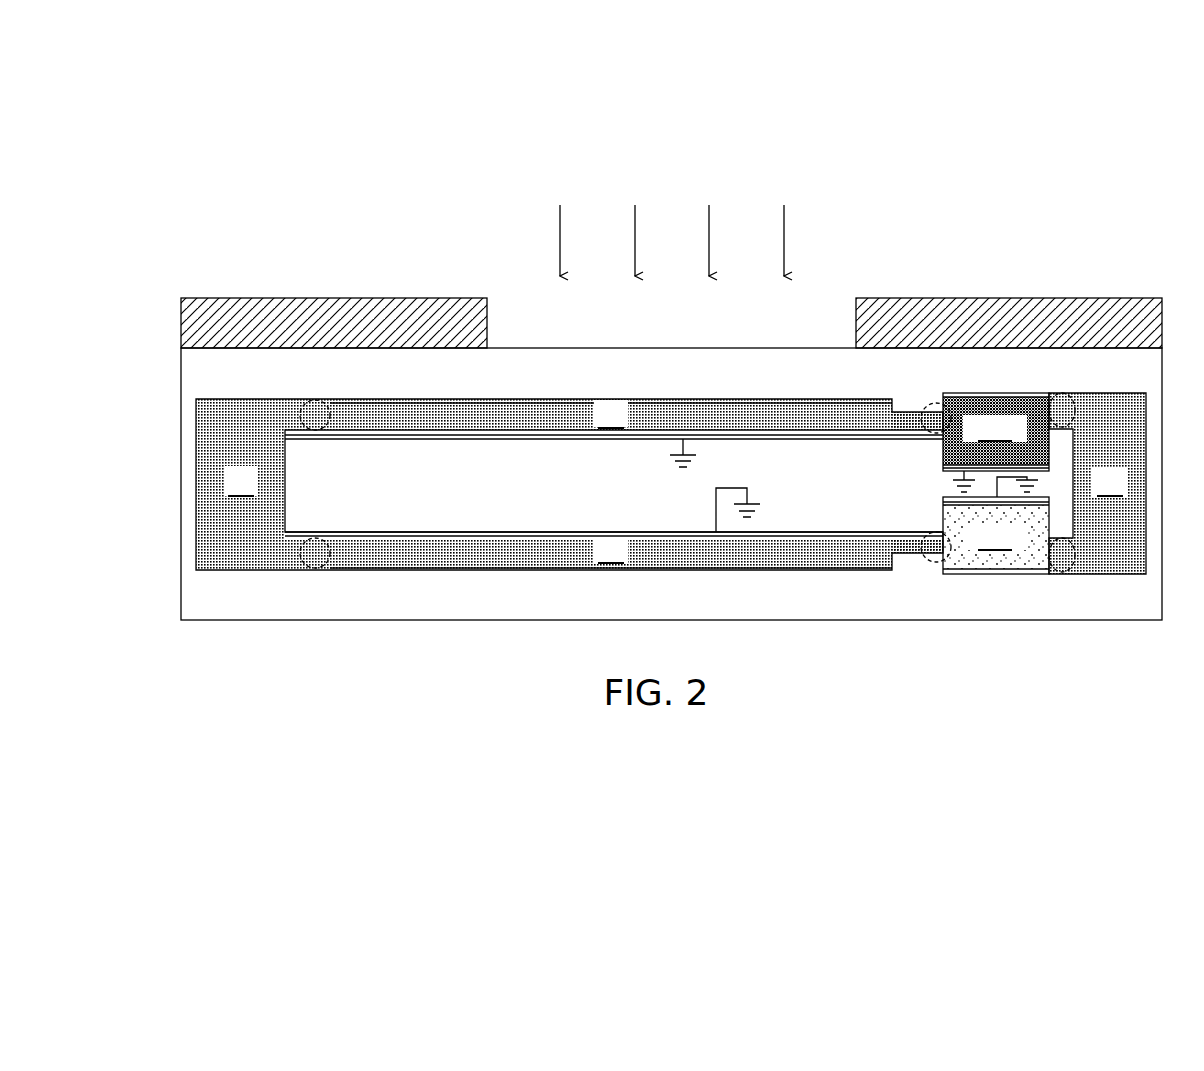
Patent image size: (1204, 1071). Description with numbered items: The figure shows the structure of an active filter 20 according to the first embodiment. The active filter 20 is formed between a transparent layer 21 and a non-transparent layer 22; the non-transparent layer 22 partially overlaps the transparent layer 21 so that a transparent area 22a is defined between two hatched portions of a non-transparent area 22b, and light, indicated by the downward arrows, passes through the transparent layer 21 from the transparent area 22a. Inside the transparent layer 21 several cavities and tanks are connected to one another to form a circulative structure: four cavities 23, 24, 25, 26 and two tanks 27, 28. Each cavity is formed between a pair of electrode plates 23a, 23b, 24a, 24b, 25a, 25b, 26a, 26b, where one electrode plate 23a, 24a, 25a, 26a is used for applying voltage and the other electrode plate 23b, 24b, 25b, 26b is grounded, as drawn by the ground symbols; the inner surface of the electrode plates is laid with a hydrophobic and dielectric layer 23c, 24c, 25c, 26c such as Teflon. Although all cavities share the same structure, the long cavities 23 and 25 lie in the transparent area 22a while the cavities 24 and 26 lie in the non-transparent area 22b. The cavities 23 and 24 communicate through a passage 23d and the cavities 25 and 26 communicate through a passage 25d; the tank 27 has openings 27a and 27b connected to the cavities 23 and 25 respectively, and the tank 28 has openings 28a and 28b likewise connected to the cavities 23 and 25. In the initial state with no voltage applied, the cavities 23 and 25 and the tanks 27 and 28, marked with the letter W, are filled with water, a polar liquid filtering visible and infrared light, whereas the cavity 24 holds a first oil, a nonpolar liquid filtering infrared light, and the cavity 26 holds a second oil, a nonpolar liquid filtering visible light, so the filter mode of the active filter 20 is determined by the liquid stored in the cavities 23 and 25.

The active filter 20 is at (207, 193).
The transparent layer 21 is at (181, 368).
The non-transparent layer 22 is at (665, 284).
The transparent area 22a is at (748, 308).
The non-transparent area 22b is at (331, 297).
The first cavity 23 is at (707, 415).
The electrode plate 23a is at (536, 399).
The electrode plate 23b is at (424, 439).
The hydrophobic and dielectric layer 23c is at (370, 435).
The passage 23d is at (936, 403).
The second cavity 24 is at (1034, 420).
The electrode plate 24a is at (988, 398).
The electrode plate 24b is at (943, 468).
The hydrophobic and dielectric layer 24c is at (943, 457).
The third cavity 25 is at (707, 555).
The electrode plate 25a is at (536, 570).
The electrode plate 25b is at (535, 533).
The hydrophobic and dielectric layer 25c is at (478, 538).
The passage 25d is at (936, 562).
The fourth cavity 26 is at (1032, 550).
The electrode plate 26a is at (988, 574).
The electrode plate 26b is at (943, 500).
The hydrophobic and dielectric layer 26c is at (943, 507).
The first tank 27 is at (233, 445).
The opening 27a is at (316, 400).
The opening 27b is at (316, 568).
The second tank 28 is at (1122, 443).
The opening 28a is at (1068, 400).
The opening 28b is at (1062, 565).